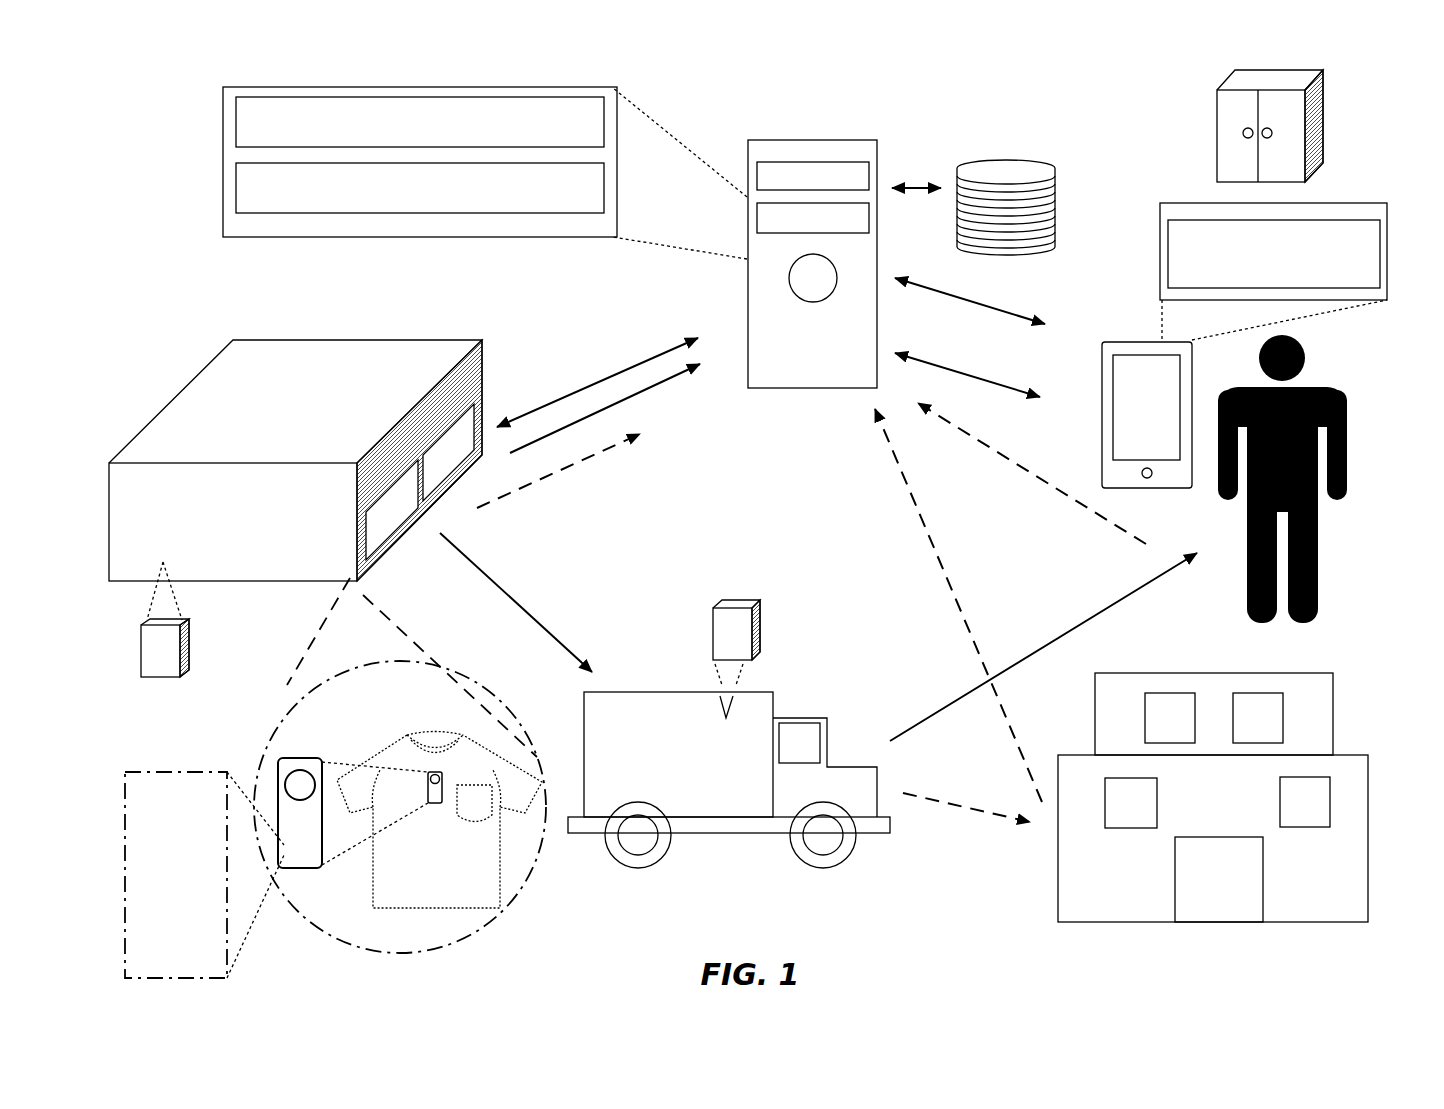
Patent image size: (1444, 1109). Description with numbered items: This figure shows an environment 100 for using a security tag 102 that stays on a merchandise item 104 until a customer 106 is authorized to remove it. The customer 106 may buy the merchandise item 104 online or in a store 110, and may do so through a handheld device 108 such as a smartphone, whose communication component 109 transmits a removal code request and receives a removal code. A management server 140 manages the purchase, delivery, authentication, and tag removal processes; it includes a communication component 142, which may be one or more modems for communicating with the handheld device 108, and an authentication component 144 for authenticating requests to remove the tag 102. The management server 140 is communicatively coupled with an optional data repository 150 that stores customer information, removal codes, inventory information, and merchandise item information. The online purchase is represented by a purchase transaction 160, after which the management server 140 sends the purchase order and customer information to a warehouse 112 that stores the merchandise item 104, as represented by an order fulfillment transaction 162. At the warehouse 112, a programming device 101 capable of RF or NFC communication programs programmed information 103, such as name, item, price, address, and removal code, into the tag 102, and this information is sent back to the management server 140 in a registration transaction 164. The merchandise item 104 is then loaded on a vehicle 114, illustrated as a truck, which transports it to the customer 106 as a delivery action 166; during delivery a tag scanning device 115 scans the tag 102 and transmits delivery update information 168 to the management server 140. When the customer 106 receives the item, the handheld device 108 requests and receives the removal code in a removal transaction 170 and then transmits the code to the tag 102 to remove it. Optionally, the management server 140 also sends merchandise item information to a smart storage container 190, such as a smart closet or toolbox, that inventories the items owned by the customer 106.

The environment 100 is at (153, 138).
The programming device 101 is at (189, 625).
The security tag 102 is at (308, 758).
The programmed information 103 is at (228, 772).
The merchandise item 104 is at (368, 750).
The customer 106 is at (1333, 388).
The handheld device 108 is at (1130, 342).
The communication component 109 is at (1274, 254).
The store 110 is at (1308, 673).
The warehouse 112 is at (291, 340).
The vehicle 114 is at (675, 692).
The tag scanning device 115 is at (760, 612).
The management server 140 is at (827, 140).
The communication component 142 is at (420, 122).
The authentication component 144 is at (420, 188).
The data repository 150 is at (1223, 236).
The purchase transaction 160 is at (957, 296).
The order fulfillment transaction 162 is at (630, 365).
The registration transaction 164 is at (645, 388).
The delivery action 166 is at (560, 617).
The delivery update information 168 is at (553, 472).
The removal transaction 170 is at (955, 373).
The smart storage container 190 is at (1325, 157).